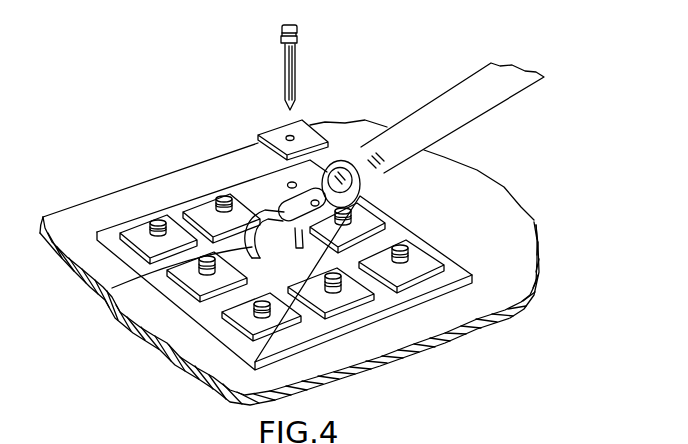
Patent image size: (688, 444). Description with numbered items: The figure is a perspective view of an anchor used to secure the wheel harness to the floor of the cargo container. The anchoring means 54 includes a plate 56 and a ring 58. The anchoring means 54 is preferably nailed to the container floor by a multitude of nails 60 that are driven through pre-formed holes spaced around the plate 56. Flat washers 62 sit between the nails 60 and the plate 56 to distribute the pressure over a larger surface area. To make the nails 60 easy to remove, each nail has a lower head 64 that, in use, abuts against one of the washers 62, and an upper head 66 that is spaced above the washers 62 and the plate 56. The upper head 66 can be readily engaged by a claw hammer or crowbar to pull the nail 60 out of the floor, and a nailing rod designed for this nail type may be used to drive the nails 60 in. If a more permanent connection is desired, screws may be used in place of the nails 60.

The anchoring means 54 is at (172, 141).
The plate 56 is at (447, 263).
The ring 58 is at (153, 270).
The nails 60 is at (342, 292).
The flat washers 62 is at (260, 330).
The lower heads 64 is at (280, 42).
The upper heads 66 is at (297, 28).